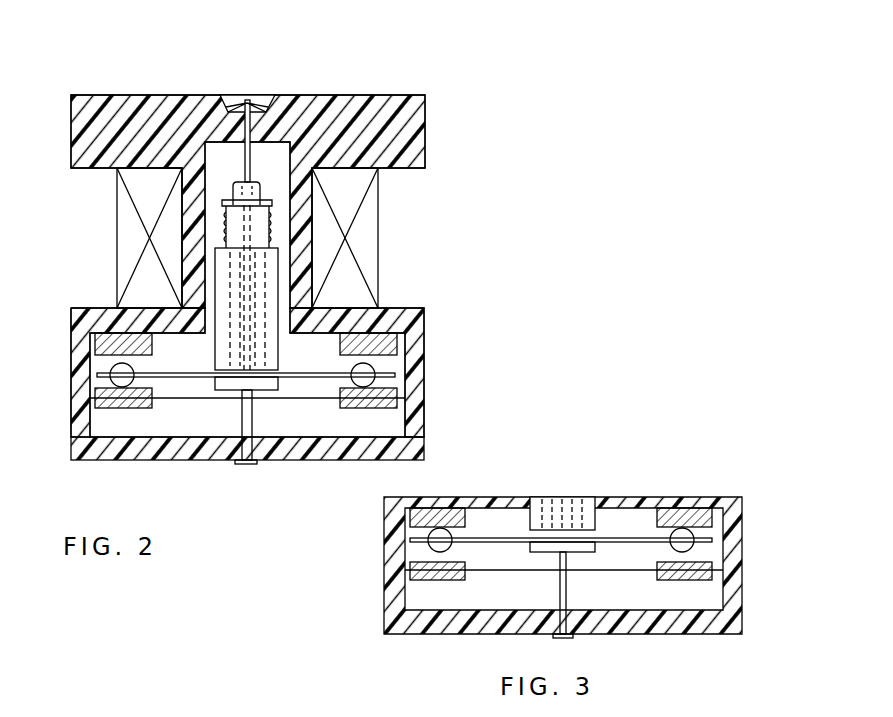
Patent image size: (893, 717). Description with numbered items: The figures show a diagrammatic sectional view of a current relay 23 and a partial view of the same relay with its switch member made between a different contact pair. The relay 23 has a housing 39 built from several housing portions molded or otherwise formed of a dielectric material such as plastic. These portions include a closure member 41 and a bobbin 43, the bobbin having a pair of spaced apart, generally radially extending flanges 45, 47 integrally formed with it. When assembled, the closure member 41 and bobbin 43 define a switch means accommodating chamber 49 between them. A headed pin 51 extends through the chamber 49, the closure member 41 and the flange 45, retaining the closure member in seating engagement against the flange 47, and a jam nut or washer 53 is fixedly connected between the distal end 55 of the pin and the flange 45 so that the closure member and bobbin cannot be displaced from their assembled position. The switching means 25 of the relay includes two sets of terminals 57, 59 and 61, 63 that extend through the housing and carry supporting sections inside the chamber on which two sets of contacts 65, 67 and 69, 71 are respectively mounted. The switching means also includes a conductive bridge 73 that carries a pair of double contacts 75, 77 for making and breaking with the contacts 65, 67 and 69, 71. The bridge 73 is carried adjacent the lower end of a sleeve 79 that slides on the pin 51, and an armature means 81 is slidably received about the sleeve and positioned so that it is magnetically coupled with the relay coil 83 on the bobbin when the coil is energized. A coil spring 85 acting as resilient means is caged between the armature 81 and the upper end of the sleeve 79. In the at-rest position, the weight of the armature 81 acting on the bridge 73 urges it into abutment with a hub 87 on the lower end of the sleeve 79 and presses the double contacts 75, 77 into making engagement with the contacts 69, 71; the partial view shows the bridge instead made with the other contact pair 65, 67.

In FIG. 2, the relay 23 is at (462, 108).
In FIG. 2, the switching means 25 is at (282, 262).
In FIG. 2, the housing 39 is at (414, 306).
In FIG. 2, the closure member 41 is at (71, 440).
In FIG. 3, the closure member 41 is at (384, 626).
In FIG. 2, the bobbin 43 is at (233, 192).
In FIG. 2, the flange 45 is at (71, 112).
In FIG. 2, the flange 47 is at (71, 312).
In FIG. 3, the flange 47 is at (384, 512).
In FIG. 2, the switch means accommodating chamber 49 is at (300, 440).
In FIG. 3, the switch means accommodating chamber 49 is at (680, 598).
In FIG. 2, the headed pin 51 is at (246, 464).
In FIG. 3, the headed pin 51 is at (578, 638).
In FIG. 2, the jam nut 53 is at (236, 108).
In FIG. 2, the distal end 55 is at (247, 100).
In FIG. 2, the terminal 57 is at (95, 345).
In FIG. 3, the terminal 57 is at (445, 515).
In FIG. 2, the terminal 59 is at (397, 344).
In FIG. 3, the terminal 59 is at (690, 510).
In FIG. 2, the terminal 61 is at (125, 410).
In FIG. 3, the terminal 61 is at (440, 582).
In FIG. 2, the terminal 63 is at (355, 408).
In FIG. 3, the terminal 63 is at (742, 550).
In FIG. 2, the contact 65 is at (110, 368).
In FIG. 3, the contact 65 is at (452, 530).
In FIG. 2, the contact 67 is at (405, 356).
In FIG. 3, the contact 67 is at (668, 520).
In FIG. 2, the contact 69 is at (185, 382).
In FIG. 3, the contact 69 is at (490, 546).
In FIG. 2, the contact 71 is at (350, 408).
In FIG. 3, the contact 71 is at (700, 540).
In FIG. 2, the bridge 73 is at (196, 440).
In FIG. 3, the bridge 73 is at (505, 538).
In FIG. 2, the double contact 75 is at (95, 400).
In FIG. 3, the double contact 75 is at (420, 566).
In FIG. 2, the double contact 77 is at (410, 372).
In FIG. 3, the double contact 77 is at (742, 512).
In FIG. 2, the sleeve 79 is at (226, 212).
In FIG. 2, the armature means 81 is at (292, 242).
In FIG. 3, the armature means 81 is at (566, 498).
In FIG. 2, the relay coil 83 is at (378, 192).
In FIG. 2, the coil spring 85 is at (192, 238).
In FIG. 2, the hub 87 is at (258, 395).
In FIG. 3, the hub 87 is at (625, 555).